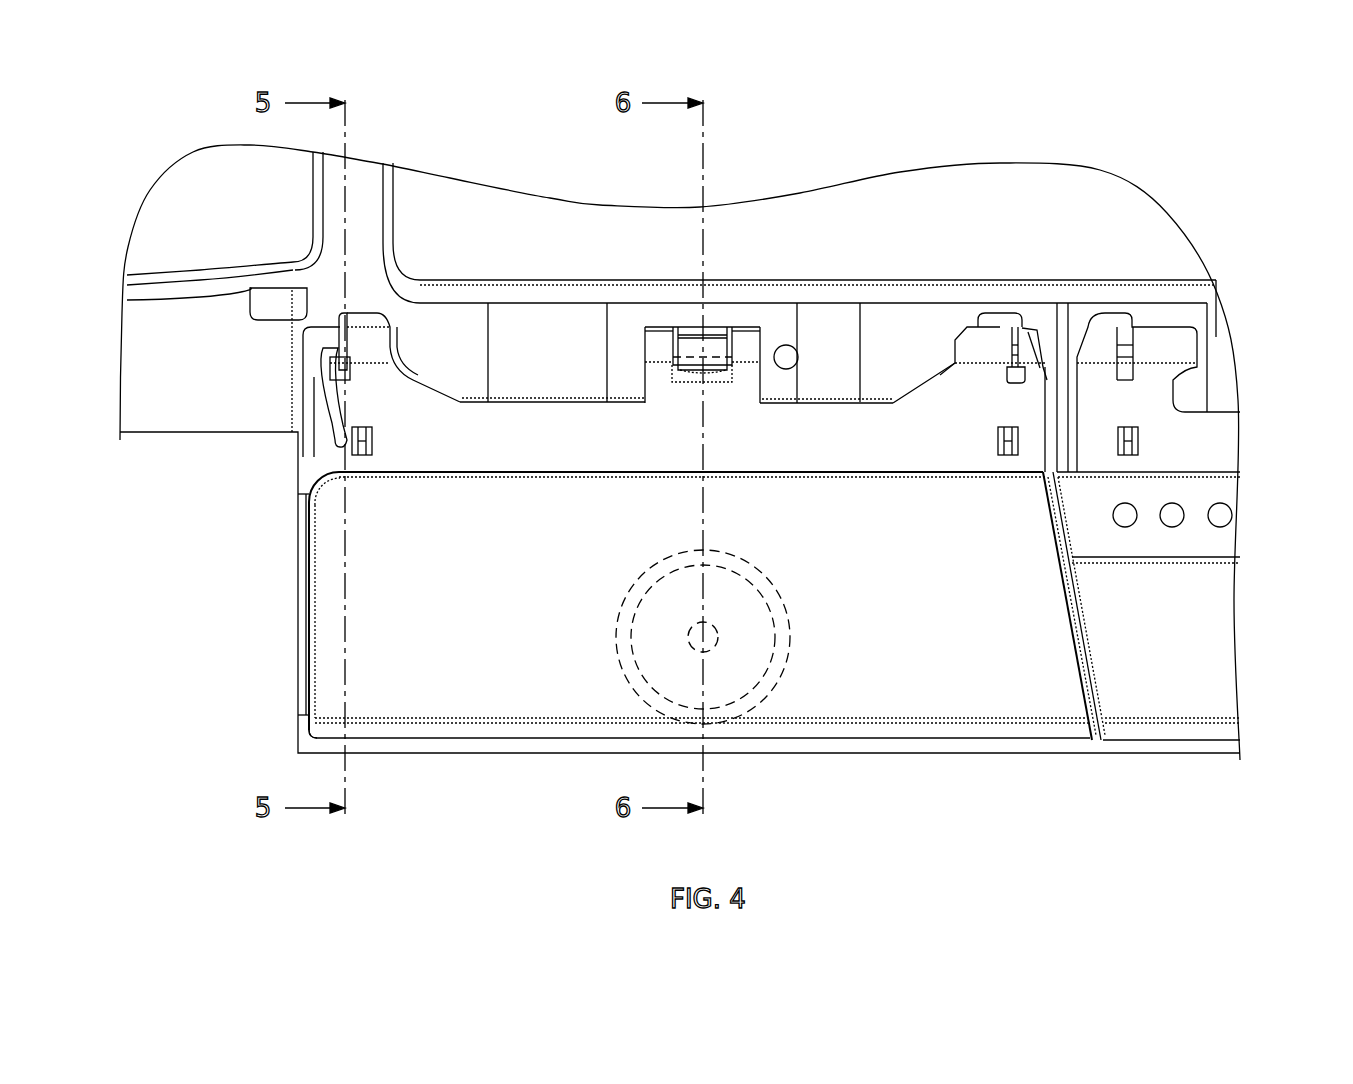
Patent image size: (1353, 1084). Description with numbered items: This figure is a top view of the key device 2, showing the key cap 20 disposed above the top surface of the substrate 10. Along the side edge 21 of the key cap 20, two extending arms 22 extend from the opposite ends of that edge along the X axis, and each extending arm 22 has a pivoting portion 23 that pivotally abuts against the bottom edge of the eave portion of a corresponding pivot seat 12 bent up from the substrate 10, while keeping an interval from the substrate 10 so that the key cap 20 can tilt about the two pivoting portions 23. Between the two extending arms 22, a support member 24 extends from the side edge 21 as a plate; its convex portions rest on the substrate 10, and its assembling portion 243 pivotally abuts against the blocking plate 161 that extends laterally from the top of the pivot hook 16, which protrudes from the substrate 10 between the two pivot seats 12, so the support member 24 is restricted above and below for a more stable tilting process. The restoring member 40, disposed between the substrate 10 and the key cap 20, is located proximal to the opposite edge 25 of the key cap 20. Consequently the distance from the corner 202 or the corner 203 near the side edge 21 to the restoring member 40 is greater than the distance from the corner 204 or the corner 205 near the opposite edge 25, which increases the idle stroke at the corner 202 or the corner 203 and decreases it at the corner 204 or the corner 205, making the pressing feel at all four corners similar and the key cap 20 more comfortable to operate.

The key device 2 is at (303, 613).
The substrate 10 is at (978, 757).
The pivot seat 12 is at (327, 333).
The pivot hook 16 is at (712, 343).
The blocking plate 161 is at (720, 343).
The key cap 20 is at (870, 697).
The side edge 21 is at (820, 467).
The extending arm 22 is at (307, 410).
The pivoting portion 23 is at (330, 360).
The support member 24 is at (657, 343).
The assembling portion 243 is at (697, 347).
The opposite edge 25 is at (505, 740).
The restoring member 40 is at (770, 697).
The corner 202 is at (327, 510).
The corner 203 is at (1020, 498).
The corner 204 is at (327, 705).
The corner 205 is at (1048, 685).